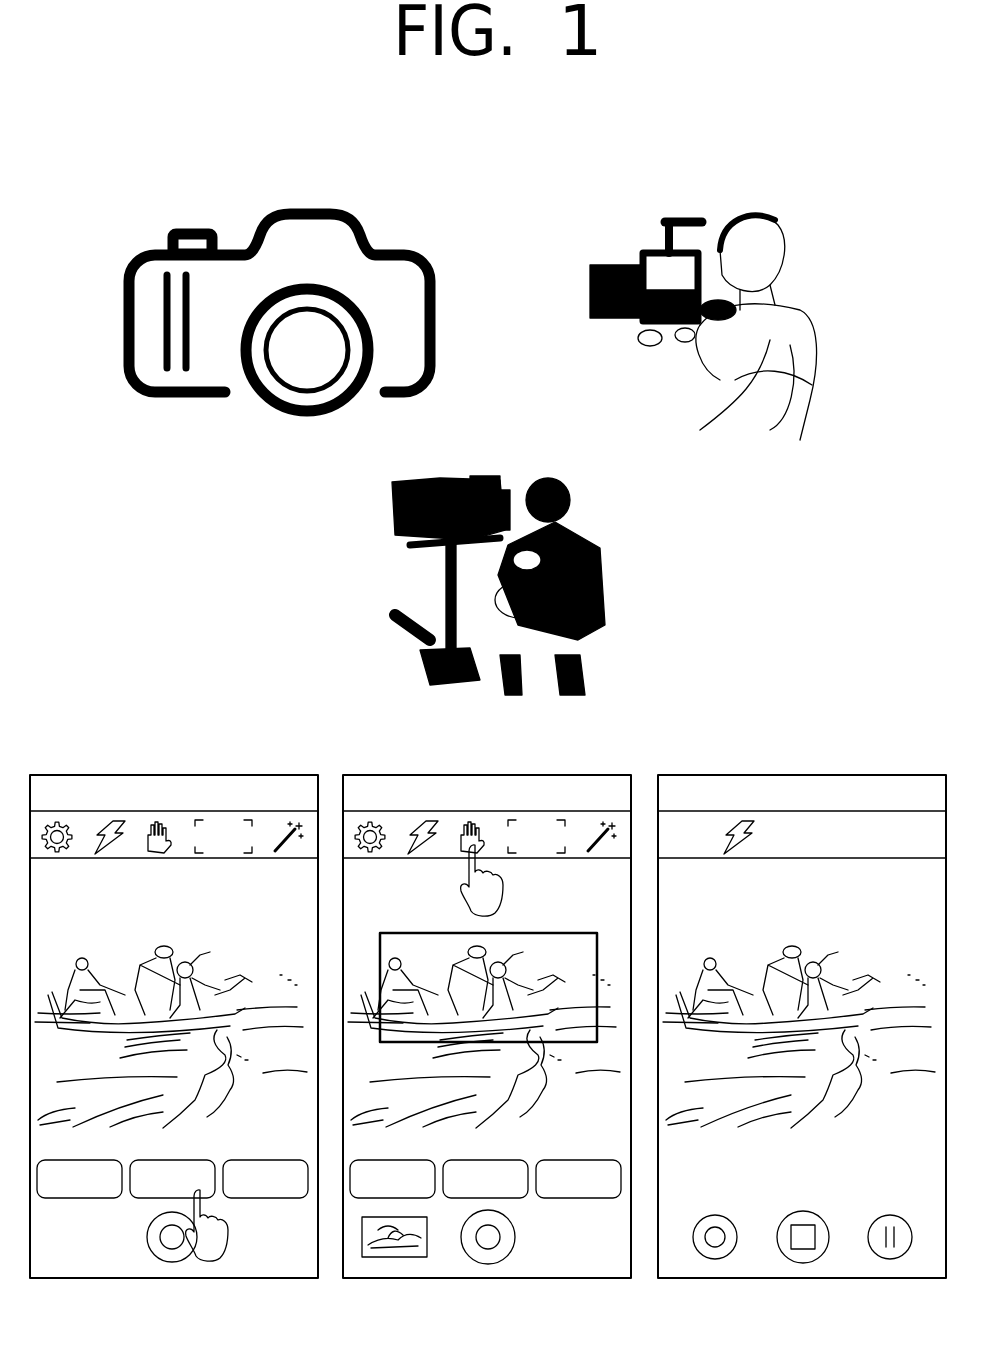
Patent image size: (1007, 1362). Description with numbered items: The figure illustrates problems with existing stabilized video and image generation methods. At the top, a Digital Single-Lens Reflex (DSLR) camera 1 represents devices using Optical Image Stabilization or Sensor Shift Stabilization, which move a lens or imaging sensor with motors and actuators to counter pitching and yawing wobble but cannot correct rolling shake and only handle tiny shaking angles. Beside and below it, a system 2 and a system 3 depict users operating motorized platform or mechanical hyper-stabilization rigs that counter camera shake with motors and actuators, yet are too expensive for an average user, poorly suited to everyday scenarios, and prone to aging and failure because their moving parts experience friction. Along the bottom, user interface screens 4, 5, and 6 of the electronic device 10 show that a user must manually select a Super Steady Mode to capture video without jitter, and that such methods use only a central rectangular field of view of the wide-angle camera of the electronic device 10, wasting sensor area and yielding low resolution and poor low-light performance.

The Digital Single-Lens Reflex (DSLR) camera 1 is at (435, 297).
The system 2 is at (780, 241).
The system 3 is at (578, 500).
The user interface screen 4 is at (97, 775).
The user interface screen 5 is at (412, 775).
The user interface screen 6 is at (727, 775).
The electronic device 10 is at (909, 807).